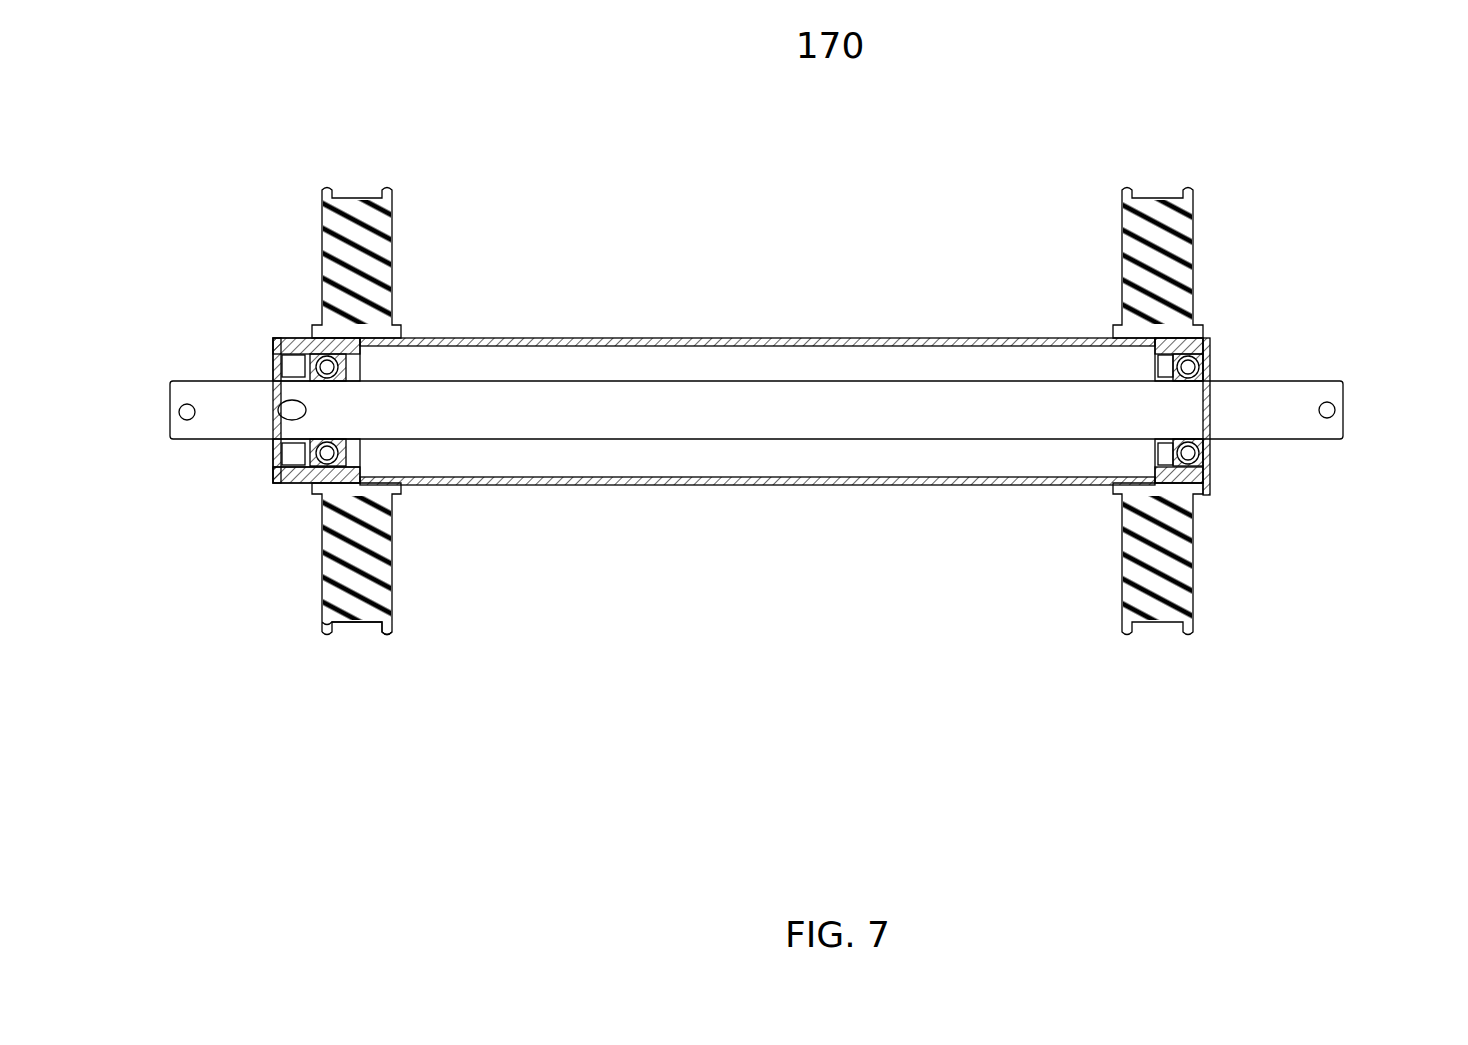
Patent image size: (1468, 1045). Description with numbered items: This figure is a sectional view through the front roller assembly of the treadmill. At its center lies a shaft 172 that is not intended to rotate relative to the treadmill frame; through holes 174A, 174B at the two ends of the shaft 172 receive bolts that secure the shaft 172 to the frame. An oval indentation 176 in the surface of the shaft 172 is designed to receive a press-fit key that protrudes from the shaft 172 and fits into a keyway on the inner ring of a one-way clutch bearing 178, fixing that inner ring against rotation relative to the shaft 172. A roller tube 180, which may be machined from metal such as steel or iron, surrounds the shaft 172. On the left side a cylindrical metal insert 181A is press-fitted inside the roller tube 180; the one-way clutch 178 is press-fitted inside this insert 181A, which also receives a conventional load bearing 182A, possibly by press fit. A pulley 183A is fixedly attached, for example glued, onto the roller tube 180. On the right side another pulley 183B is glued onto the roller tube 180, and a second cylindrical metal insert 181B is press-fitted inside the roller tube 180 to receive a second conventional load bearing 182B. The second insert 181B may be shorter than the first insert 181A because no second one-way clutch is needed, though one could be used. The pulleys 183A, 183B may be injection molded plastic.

The shaft 172 is at (756, 318).
The through hole 174A is at (146, 387).
The through hole 174B is at (1376, 377).
The oval indentation 176 is at (201, 383).
The one-way clutch bearing 178 is at (252, 481).
The roller tube 180 is at (757, 321).
The cylindrical metal insert 181A is at (247, 307).
The second cylindrical metal insert 181B is at (1244, 396).
The load bearing 182A is at (258, 494).
The second load bearing 182B is at (1252, 467).
The pulley 183A is at (409, 392).
The pulley 183B is at (1223, 407).